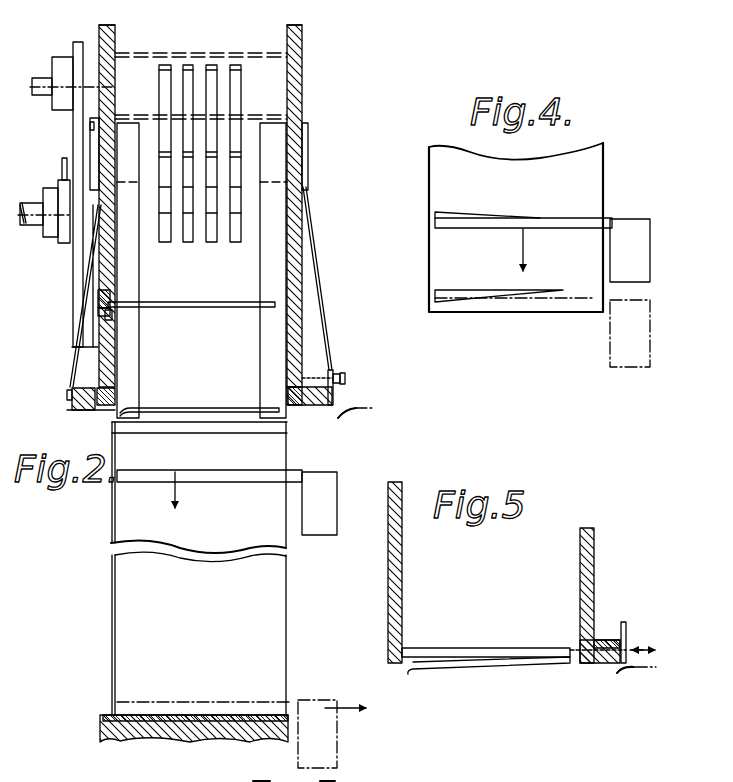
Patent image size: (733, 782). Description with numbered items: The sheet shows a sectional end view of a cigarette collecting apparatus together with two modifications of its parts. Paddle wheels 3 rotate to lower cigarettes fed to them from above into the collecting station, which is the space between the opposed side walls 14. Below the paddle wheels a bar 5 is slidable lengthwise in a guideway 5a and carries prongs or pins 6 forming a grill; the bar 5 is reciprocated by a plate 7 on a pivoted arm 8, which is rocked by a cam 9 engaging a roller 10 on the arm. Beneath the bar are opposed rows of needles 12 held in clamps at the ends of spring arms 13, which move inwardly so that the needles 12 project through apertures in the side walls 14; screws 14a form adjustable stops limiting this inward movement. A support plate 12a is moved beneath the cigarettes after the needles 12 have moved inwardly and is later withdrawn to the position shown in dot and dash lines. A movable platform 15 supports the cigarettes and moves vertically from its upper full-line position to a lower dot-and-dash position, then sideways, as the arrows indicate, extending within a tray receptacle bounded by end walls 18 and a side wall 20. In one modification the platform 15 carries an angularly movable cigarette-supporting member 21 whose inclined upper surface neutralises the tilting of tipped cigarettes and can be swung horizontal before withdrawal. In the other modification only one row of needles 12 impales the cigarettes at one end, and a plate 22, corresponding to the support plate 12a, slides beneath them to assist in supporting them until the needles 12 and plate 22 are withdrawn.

In FIG. 2, the paddle wheels 3 is at (208, 80).
In FIG. 2, the bar 5 is at (98, 312).
In FIG. 2, the guideway 5a is at (113, 314).
In FIG. 2, the prongs or pins 6 is at (200, 302).
In FIG. 2, the plate 7 is at (90, 293).
In FIG. 2, the pivoted arm 8 is at (80, 252).
In FIG. 2, the cam 9 is at (62, 180).
In FIG. 2, the roller 10 is at (66, 170).
In FIG. 2, the needles 12 is at (118, 392).
In FIG. 5, the needles 12 is at (582, 648).
In FIG. 2, the support plate 12a is at (189, 406).
In FIG. 2, the spring arms 13 is at (62, 345).
In FIG. 2, the side walls 14 is at (110, 262).
In FIG. 5, the side walls 14 is at (396, 575).
In FIG. 2, the screws 14a is at (333, 372).
In FIG. 2, the movable platform 15 is at (150, 470).
In FIG. 4, the movable platform 15 is at (570, 228).
In FIG. 2, the end walls 18 is at (287, 618).
In FIG. 2, the side wall 20 is at (114, 620).
In FIG. 4, the cigarette-supporting member 21 is at (448, 213).
In FIG. 5, the plate 22 is at (456, 663).